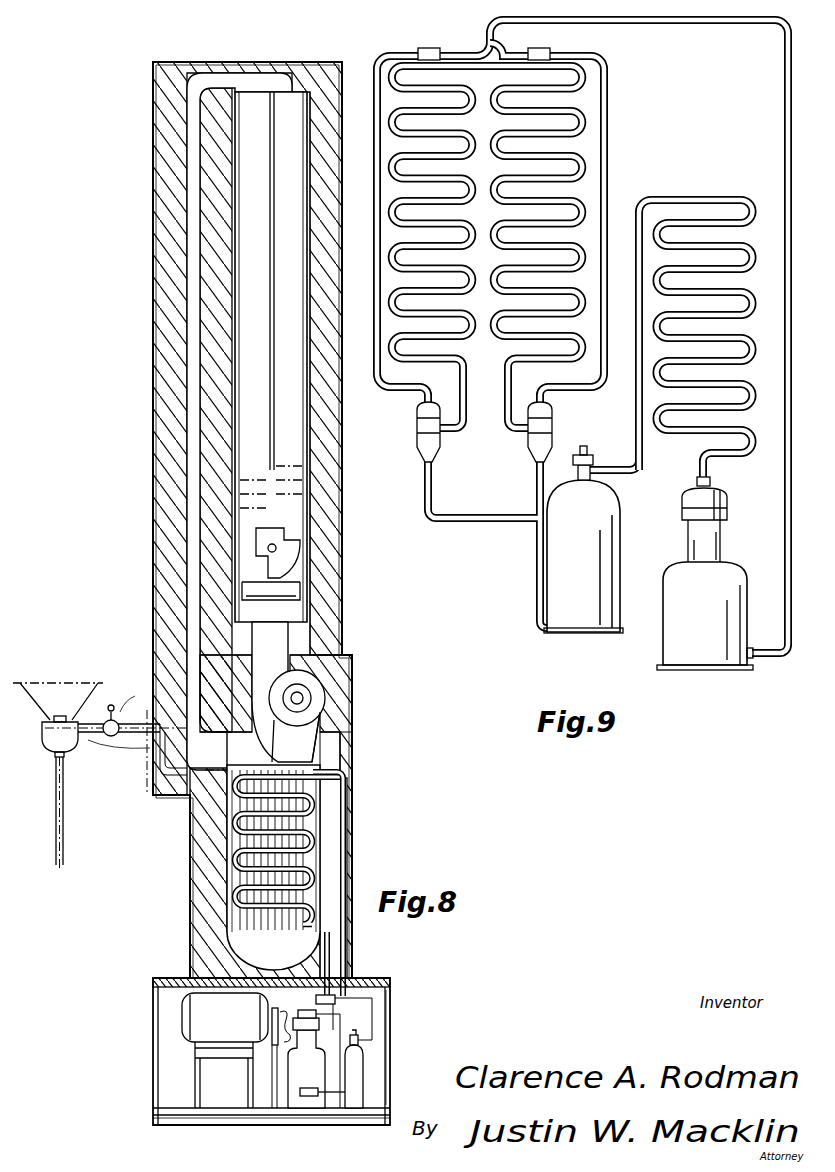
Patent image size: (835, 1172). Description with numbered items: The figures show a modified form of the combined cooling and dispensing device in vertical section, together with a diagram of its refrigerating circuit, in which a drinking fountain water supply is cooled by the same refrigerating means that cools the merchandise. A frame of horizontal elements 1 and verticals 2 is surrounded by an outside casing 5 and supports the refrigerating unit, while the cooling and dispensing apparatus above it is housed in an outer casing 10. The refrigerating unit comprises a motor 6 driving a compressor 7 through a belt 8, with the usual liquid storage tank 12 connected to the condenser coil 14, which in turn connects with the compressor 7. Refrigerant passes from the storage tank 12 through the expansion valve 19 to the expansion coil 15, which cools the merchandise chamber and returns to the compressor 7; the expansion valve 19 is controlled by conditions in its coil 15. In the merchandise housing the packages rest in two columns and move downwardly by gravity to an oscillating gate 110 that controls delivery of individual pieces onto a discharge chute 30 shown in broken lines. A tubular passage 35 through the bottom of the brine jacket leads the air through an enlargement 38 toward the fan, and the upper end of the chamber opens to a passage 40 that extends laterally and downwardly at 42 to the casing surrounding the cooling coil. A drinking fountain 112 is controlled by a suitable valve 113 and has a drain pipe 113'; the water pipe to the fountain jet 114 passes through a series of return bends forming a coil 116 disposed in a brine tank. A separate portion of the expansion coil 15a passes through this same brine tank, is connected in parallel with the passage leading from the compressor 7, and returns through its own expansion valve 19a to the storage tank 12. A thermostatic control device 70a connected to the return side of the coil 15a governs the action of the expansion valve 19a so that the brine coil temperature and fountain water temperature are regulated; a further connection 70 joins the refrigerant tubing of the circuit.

In FIG. 8, the horizontal elements 1 is at (192, 1117).
In FIG. 8, the verticals 2 is at (386, 1070).
In FIG. 8, the outside casing 5 is at (153, 1080).
In FIG. 8, the motor 6 is at (225, 1050).
In FIG. 8, the compressor 7 is at (316, 1063).
In FIG. 9, the compressor 7 is at (705, 573).
In FIG. 8, the belt 8 is at (272, 1066).
In FIG. 8, the outer casing 10 is at (342, 632).
In FIG. 8, the liquid storage tank 12 is at (353, 1069).
In FIG. 9, the liquid storage tank 12 is at (583, 539).
In FIG. 8, the condenser coil 14 is at (385, 1010).
In FIG. 9, the condenser coil 14 is at (710, 194).
In FIG. 8, the expansion coil 15 is at (237, 826).
In FIG. 9, the expansion coil 15 is at (553, 206).
In FIG. 9, the separate portion of expansion coil 15a is at (458, 276).
In FIG. 8, the expansion valve 19 is at (332, 1050).
In FIG. 9, the expansion valve 19 is at (553, 426).
In FIG. 9, the expansion valve 19a is at (416, 430).
In FIG. 8, the discharge chute 30 is at (272, 600).
In FIG. 8, the tubular passage 35 is at (288, 692).
In FIG. 8, the enlargement of the passage 38 is at (322, 682).
In FIG. 8, the passage 40 is at (265, 92).
In FIG. 8, the downward extension of passage 42 is at (190, 143).
In FIG. 8, the refrigerant tube 70 is at (346, 788).
In FIG. 9, the refrigerant tube 70 is at (540, 55).
In FIG. 9, the thermostatic control device 70a is at (429, 55).
In FIG. 8, the oscillating gate 110 is at (270, 566).
In FIG. 8, the drinking fountain 112 is at (62, 683).
In FIG. 8, the valve 113 is at (119, 716).
In FIG. 8, the drain pipe 113' is at (101, 789).
In FIG. 8, the fountain jet 114 is at (78, 722).
In FIG. 8, the coil 116 is at (193, 760).